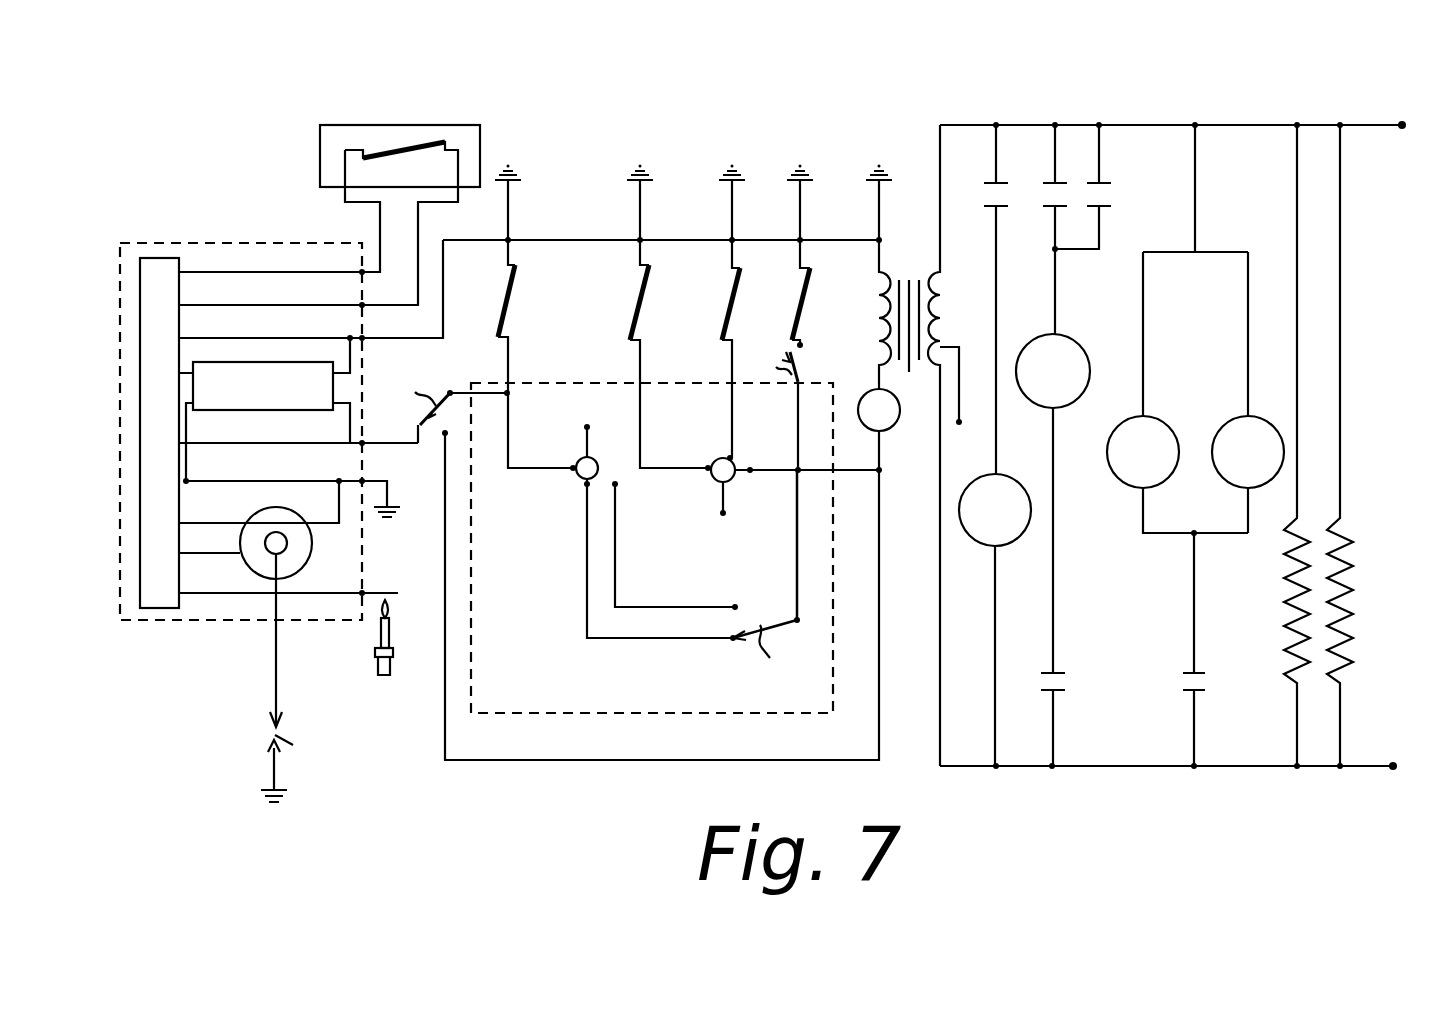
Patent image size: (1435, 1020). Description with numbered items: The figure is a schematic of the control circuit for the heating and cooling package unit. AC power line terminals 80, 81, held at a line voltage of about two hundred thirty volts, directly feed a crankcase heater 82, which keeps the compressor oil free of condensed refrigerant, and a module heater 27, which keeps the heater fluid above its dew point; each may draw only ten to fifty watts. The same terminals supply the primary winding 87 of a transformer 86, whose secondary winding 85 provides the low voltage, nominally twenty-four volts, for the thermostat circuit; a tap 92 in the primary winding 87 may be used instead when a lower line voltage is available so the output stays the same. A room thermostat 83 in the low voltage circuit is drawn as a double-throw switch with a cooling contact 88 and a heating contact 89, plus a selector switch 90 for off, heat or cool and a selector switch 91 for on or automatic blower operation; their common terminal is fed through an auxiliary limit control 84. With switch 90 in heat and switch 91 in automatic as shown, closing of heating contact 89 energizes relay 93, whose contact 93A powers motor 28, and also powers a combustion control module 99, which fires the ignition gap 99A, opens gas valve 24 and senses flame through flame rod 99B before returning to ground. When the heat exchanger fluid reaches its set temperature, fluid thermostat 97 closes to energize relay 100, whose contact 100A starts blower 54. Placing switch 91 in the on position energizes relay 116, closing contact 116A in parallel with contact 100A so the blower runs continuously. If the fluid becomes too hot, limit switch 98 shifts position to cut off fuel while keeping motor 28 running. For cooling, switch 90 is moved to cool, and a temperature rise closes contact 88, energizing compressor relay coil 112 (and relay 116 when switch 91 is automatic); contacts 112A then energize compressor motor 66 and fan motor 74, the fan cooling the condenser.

The gas valve 24 is at (432, 125).
The combustion control module 99 is at (260, 243).
The ignition gap 99A is at (300, 768).
The flame rod 99B is at (365, 593).
The limit switch 98 is at (442, 392).
The relay 93 is at (508, 318).
The compressor relay coil 112 is at (640, 320).
The relay coil 116 is at (732, 320).
The relay 100 is at (798, 320).
The fluid temperature sensing thermostat 97 is at (800, 372).
The thermostat 83 is at (683, 713).
The selector switch 90 is at (595, 460).
The selector switch 91 is at (716, 460).
The cooling contact 88 is at (737, 606).
The heating contact 89 is at (693, 571).
The secondary winding 85 is at (879, 356).
The transformer 86 is at (909, 372).
The primary winding 87 is at (934, 315).
The tap 92 is at (960, 408).
The auxiliary limit control 84 is at (879, 429).
The power line terminal 80 is at (1396, 125).
The power line terminal 81 is at (1377, 768).
The relay contact 93A is at (988, 206).
The relay contact 116A is at (1052, 183).
The relay contact 100A is at (1105, 207).
The relay contacts 112A is at (1180, 671).
The blower 54 is at (1102, 332).
The motor 28 is at (998, 545).
The compressor motor 66 is at (1158, 428).
The fan motor 74 is at (1257, 428).
The module heater 27 is at (1290, 612).
The crankcase heater 82 is at (1348, 550).